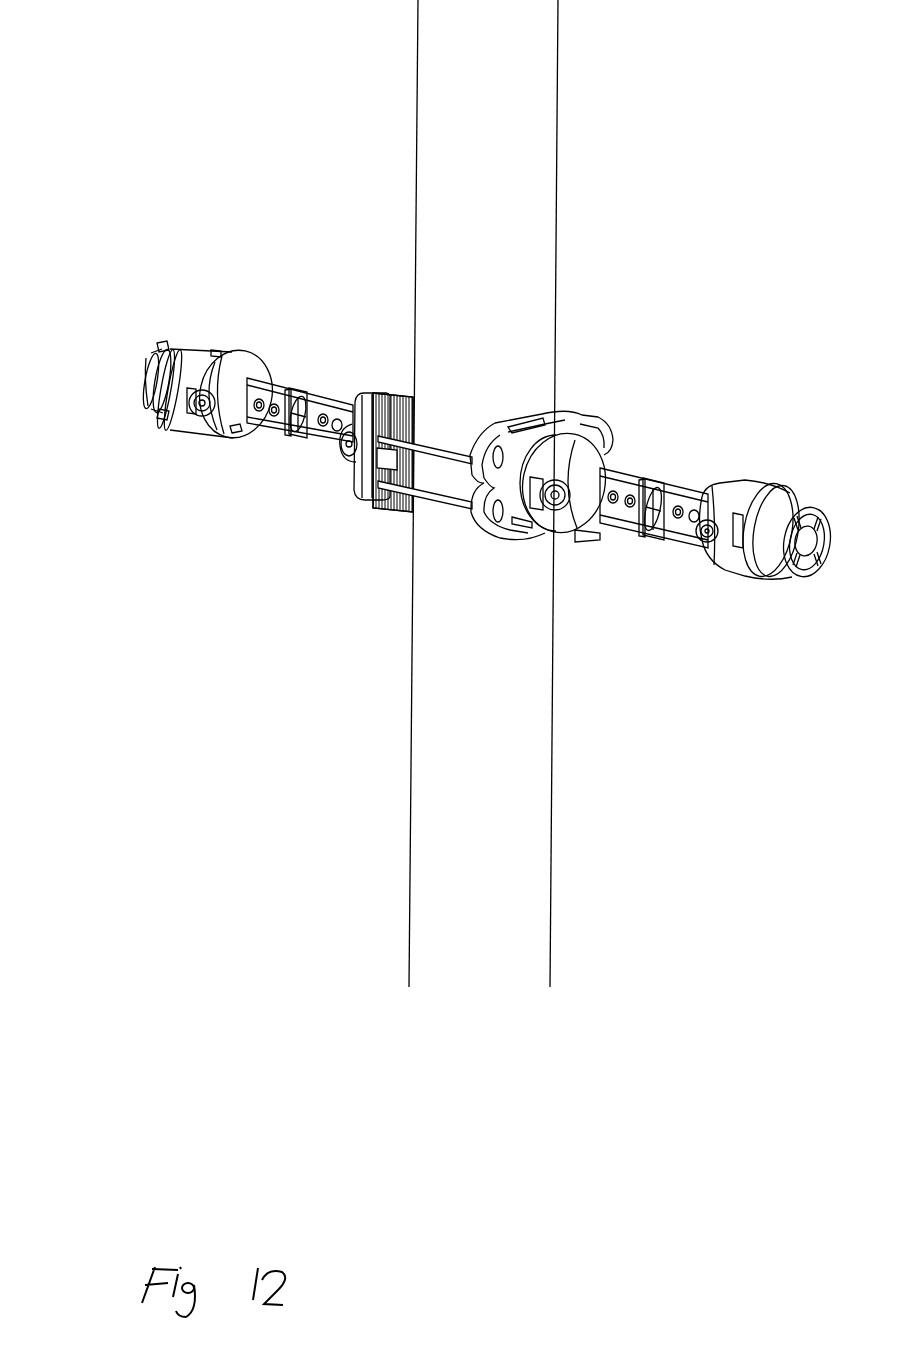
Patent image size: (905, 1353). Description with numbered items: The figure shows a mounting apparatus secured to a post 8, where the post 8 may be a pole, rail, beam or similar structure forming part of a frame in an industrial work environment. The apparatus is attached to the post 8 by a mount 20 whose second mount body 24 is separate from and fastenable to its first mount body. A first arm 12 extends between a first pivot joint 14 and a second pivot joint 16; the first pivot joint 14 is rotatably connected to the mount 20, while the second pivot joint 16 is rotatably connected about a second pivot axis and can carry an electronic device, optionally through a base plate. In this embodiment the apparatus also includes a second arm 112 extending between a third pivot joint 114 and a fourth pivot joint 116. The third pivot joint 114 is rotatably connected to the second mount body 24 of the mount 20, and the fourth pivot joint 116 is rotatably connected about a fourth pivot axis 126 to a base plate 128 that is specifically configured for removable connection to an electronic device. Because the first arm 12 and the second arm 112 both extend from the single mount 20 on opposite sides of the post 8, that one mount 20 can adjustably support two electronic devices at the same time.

The post 8 is at (335, 125).
The fourth pivot axis 126 is at (93, 399).
The base plate 128 is at (150, 360).
The fourth pivot joint 116 is at (225, 358).
The second arm 112 is at (299, 448).
The third pivot joint 114 is at (365, 406).
The second mount body 24 is at (401, 485).
The mount 20 is at (542, 422).
The first pivot joint 14 is at (579, 580).
The first arm 12 is at (654, 534).
The second pivot joint 16 is at (766, 489).